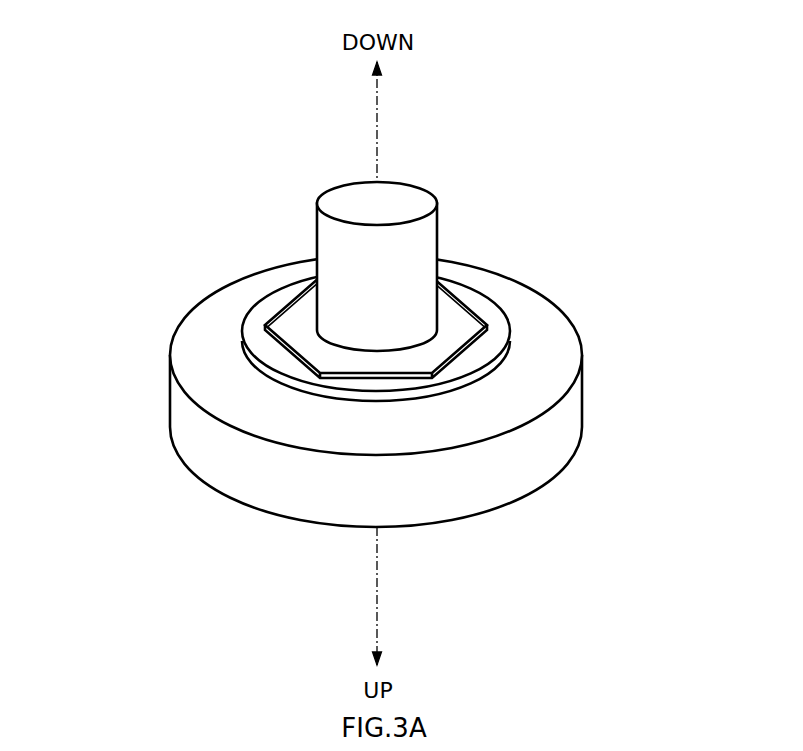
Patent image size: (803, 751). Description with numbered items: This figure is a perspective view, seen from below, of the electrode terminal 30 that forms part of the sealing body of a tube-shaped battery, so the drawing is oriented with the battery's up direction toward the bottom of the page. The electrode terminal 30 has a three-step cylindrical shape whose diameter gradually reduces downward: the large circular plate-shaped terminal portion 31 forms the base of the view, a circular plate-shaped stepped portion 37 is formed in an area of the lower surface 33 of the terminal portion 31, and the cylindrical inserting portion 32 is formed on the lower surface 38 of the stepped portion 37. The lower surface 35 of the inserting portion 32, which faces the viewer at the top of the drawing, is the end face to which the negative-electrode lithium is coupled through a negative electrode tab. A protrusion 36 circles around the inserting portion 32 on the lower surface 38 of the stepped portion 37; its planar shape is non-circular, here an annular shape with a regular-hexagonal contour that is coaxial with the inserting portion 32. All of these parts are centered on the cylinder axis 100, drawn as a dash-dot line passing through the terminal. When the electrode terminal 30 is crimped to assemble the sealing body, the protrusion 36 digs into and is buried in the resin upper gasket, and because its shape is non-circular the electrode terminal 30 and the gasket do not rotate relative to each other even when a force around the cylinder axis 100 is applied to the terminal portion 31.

The electrode terminal 30 is at (389, 322).
The terminal portion 31 is at (537, 452).
The inserting portion 32 is at (415, 253).
The lower surface of the terminal portion 33 is at (207, 367).
The lower surface of the inserting portion 35 is at (343, 203).
The protrusion 36 is at (488, 322).
The stepped portion 37 is at (490, 364).
The lower surface of the stepped portion 38 is at (273, 302).
The cylinder axis 100 is at (378, 163).